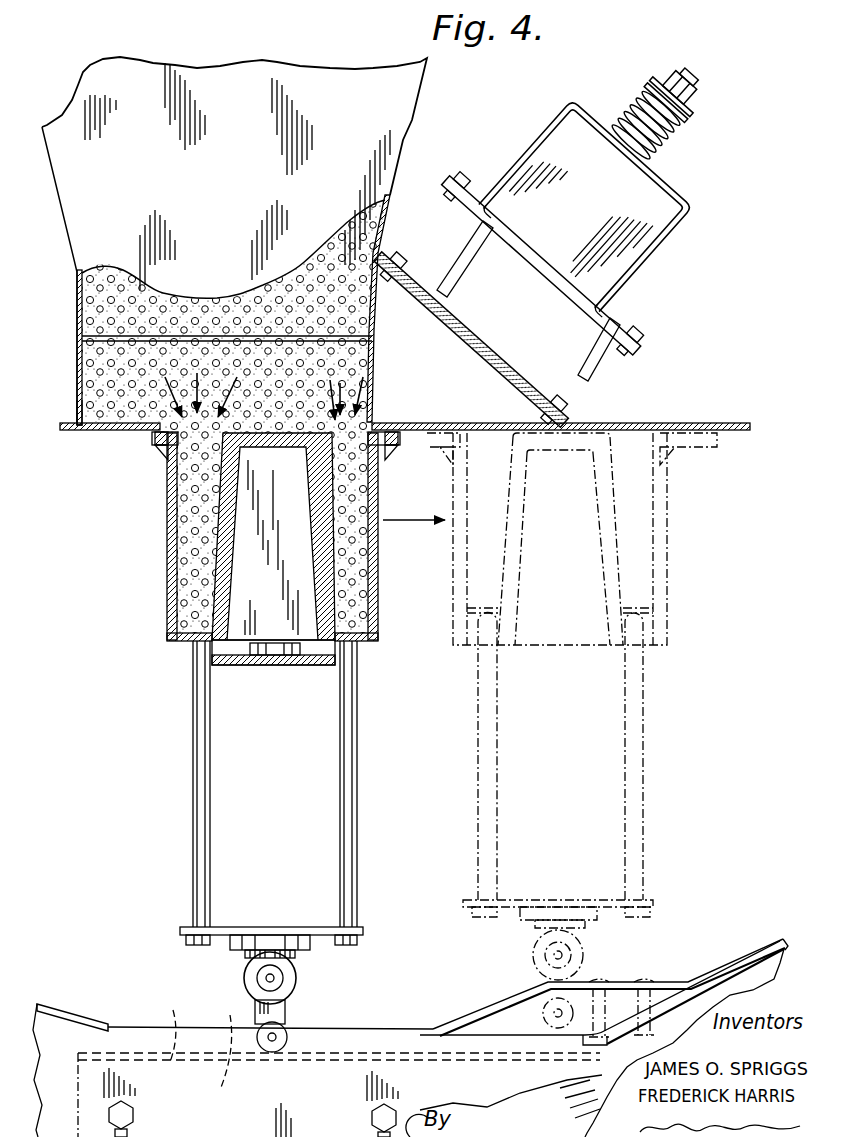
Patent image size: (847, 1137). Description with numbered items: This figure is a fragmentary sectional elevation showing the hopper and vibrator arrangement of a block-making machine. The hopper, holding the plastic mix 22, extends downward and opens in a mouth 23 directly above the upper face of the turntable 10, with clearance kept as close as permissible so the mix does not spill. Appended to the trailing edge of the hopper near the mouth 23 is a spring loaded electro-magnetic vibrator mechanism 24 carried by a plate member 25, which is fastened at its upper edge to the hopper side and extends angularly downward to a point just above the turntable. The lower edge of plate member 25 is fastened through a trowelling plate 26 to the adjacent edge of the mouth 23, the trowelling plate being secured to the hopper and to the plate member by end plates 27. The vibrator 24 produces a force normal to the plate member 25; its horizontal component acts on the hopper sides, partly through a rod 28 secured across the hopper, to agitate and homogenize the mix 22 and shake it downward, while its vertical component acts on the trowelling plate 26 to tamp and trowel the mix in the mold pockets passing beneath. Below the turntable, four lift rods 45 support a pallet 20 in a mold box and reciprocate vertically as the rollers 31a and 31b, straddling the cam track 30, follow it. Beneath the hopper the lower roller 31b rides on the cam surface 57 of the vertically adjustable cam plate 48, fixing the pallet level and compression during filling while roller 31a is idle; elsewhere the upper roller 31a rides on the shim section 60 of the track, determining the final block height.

The turntable 10 is at (114, 445).
The pallets 20 is at (372, 648).
The hopper 22 is at (249, 186).
The hopper mouth 23 is at (70, 427).
The vibrator mechanism 24 is at (603, 203).
The plate member 25 is at (482, 356).
The trowelling plate 26 is at (421, 424).
The end plates 27 is at (446, 350).
The rod 28 is at (336, 340).
The cam track 30 is at (87, 1022).
The upper roller 31a is at (350, 988).
The lower roller 31b is at (347, 1019).
The lift rods 45 is at (193, 820).
The cam plate 48 is at (232, 1014).
The cam surface 57 is at (175, 1014).
The shim section 60 is at (497, 1000).